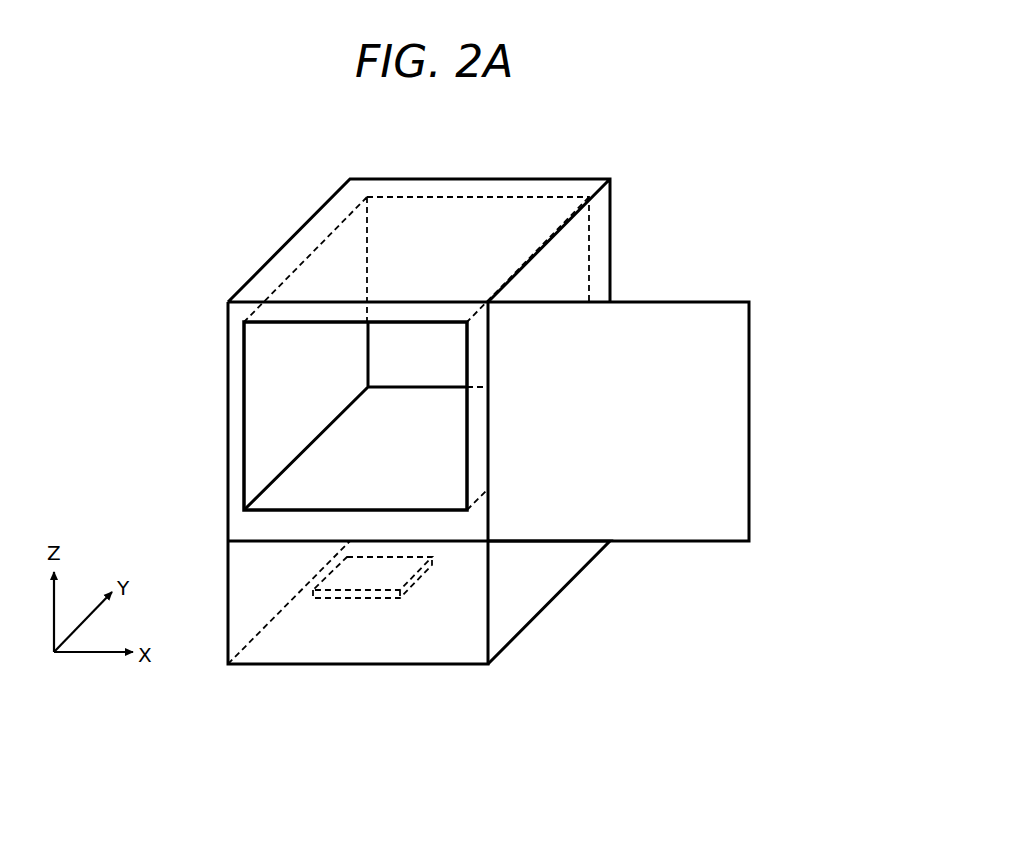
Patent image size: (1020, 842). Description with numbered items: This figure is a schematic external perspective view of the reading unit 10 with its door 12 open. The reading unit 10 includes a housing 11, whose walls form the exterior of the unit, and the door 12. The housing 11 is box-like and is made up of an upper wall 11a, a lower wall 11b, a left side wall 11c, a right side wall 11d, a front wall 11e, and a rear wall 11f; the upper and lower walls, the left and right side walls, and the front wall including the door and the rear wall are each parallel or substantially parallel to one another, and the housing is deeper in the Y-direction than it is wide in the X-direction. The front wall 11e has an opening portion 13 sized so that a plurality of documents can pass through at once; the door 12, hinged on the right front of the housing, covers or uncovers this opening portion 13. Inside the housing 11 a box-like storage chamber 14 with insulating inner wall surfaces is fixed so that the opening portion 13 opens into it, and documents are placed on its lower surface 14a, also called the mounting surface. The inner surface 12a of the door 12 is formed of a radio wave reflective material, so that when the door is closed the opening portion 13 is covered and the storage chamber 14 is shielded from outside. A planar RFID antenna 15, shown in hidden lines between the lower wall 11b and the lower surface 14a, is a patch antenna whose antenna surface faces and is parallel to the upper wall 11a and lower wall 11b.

The reading unit 10 is at (638, 167).
The housing 11 is at (540, 179).
The upper wall 11a is at (395, 222).
The lower wall 11b is at (362, 643).
The left side wall 11c is at (290, 235).
The right side wall 11d is at (598, 238).
The front wall 11e is at (282, 562).
The rear wall 11f is at (472, 178).
The door 12 is at (683, 303).
The inner surface 12a is at (726, 382).
The opening portion 13 is at (282, 407).
The storage chamber 14 is at (343, 463).
The lower surface 14a is at (400, 470).
The RFID antenna 15 is at (313, 590).